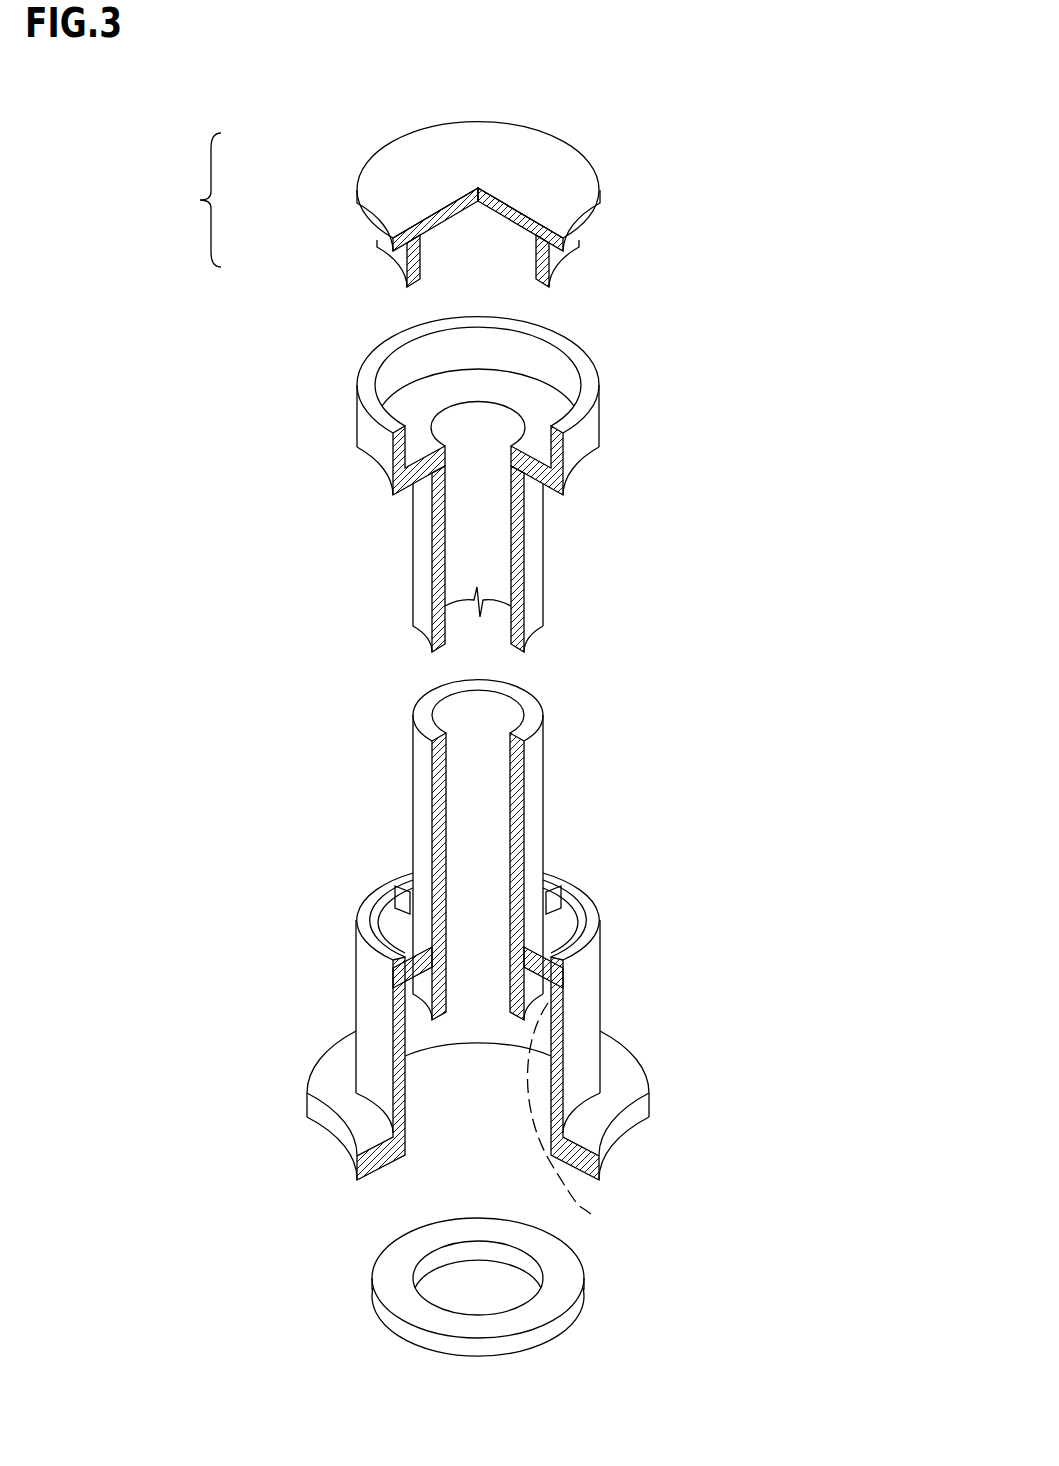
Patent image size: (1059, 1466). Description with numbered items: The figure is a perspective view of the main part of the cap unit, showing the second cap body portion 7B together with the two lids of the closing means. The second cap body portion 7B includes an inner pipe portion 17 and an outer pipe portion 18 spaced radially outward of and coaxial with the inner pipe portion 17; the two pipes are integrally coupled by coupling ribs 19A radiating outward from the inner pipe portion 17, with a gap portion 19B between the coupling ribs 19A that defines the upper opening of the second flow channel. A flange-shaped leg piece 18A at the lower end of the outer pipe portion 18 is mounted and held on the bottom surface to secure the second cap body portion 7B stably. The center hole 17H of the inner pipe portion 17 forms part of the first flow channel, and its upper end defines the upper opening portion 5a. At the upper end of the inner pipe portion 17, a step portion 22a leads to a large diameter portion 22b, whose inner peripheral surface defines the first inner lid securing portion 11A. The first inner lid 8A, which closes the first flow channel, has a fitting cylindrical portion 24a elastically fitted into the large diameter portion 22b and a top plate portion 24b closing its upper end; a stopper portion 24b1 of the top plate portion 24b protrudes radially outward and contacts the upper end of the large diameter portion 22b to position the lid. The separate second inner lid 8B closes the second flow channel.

The first inner lid 8A is at (191, 200).
The top plate portion 24b is at (423, 162).
The fitting cylindrical portion 24a is at (393, 257).
The stopper portion 24b1 is at (587, 228).
The upper opening portion 5a is at (552, 366).
The first inner lid securing portion 11A is at (396, 382).
The step portion 22a is at (541, 402).
The large diameter portion 22b is at (585, 447).
The center hole 17H is at (496, 735).
The inner pipe portion 17 is at (535, 808).
The gap portion 19B is at (565, 916).
The coupling ribs 19A is at (557, 953).
The second cap body portion 7B is at (640, 961).
The outer pipe portion 18 is at (585, 1017).
The leg piece 18A is at (622, 1093).
The second inner lid 8B is at (593, 1212).